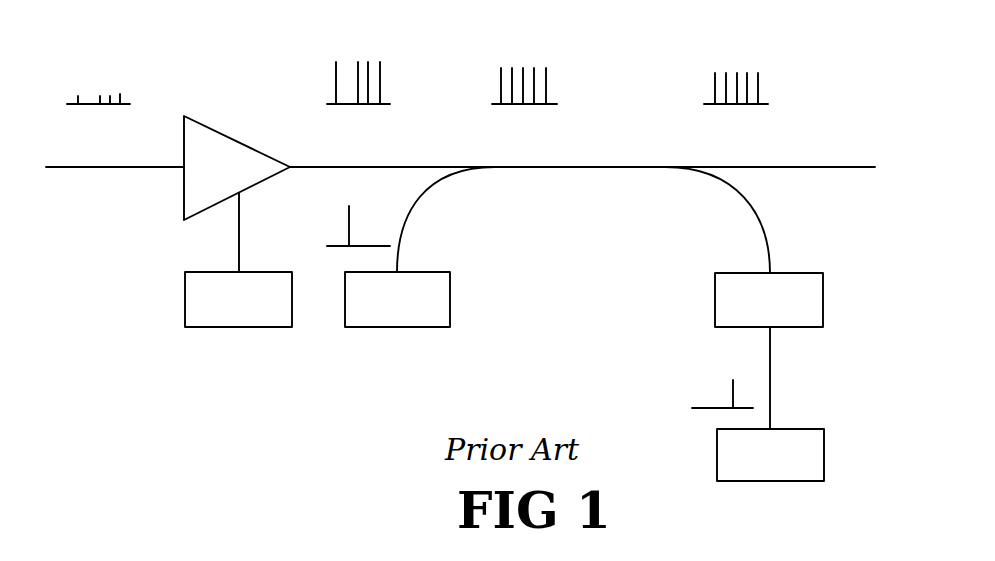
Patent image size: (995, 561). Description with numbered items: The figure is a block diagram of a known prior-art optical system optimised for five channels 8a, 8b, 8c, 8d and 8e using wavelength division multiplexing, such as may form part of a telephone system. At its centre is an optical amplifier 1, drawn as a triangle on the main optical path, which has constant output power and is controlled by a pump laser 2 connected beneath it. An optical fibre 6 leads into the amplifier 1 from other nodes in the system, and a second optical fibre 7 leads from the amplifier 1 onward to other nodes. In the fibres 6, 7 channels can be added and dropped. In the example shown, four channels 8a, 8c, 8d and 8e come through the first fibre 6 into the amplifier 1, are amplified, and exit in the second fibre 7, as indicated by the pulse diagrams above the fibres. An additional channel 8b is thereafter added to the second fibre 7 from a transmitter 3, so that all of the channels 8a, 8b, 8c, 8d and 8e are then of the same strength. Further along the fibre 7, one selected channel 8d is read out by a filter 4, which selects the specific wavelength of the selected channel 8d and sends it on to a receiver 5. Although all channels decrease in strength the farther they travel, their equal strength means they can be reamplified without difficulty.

The optical amplifier 1 is at (232, 139).
The pump laser 2 is at (185, 280).
The transmitter 3 is at (450, 300).
The filter 4 is at (823, 283).
The receiver 5 is at (824, 445).
The optical fibre 6 is at (103, 167).
The optical fibre 7 is at (362, 167).
The channel 8a is at (78, 96).
The channel 8b is at (512, 68).
The channel 8c is at (100, 96).
The channel 8d is at (110, 96).
The channel 8e is at (122, 94).